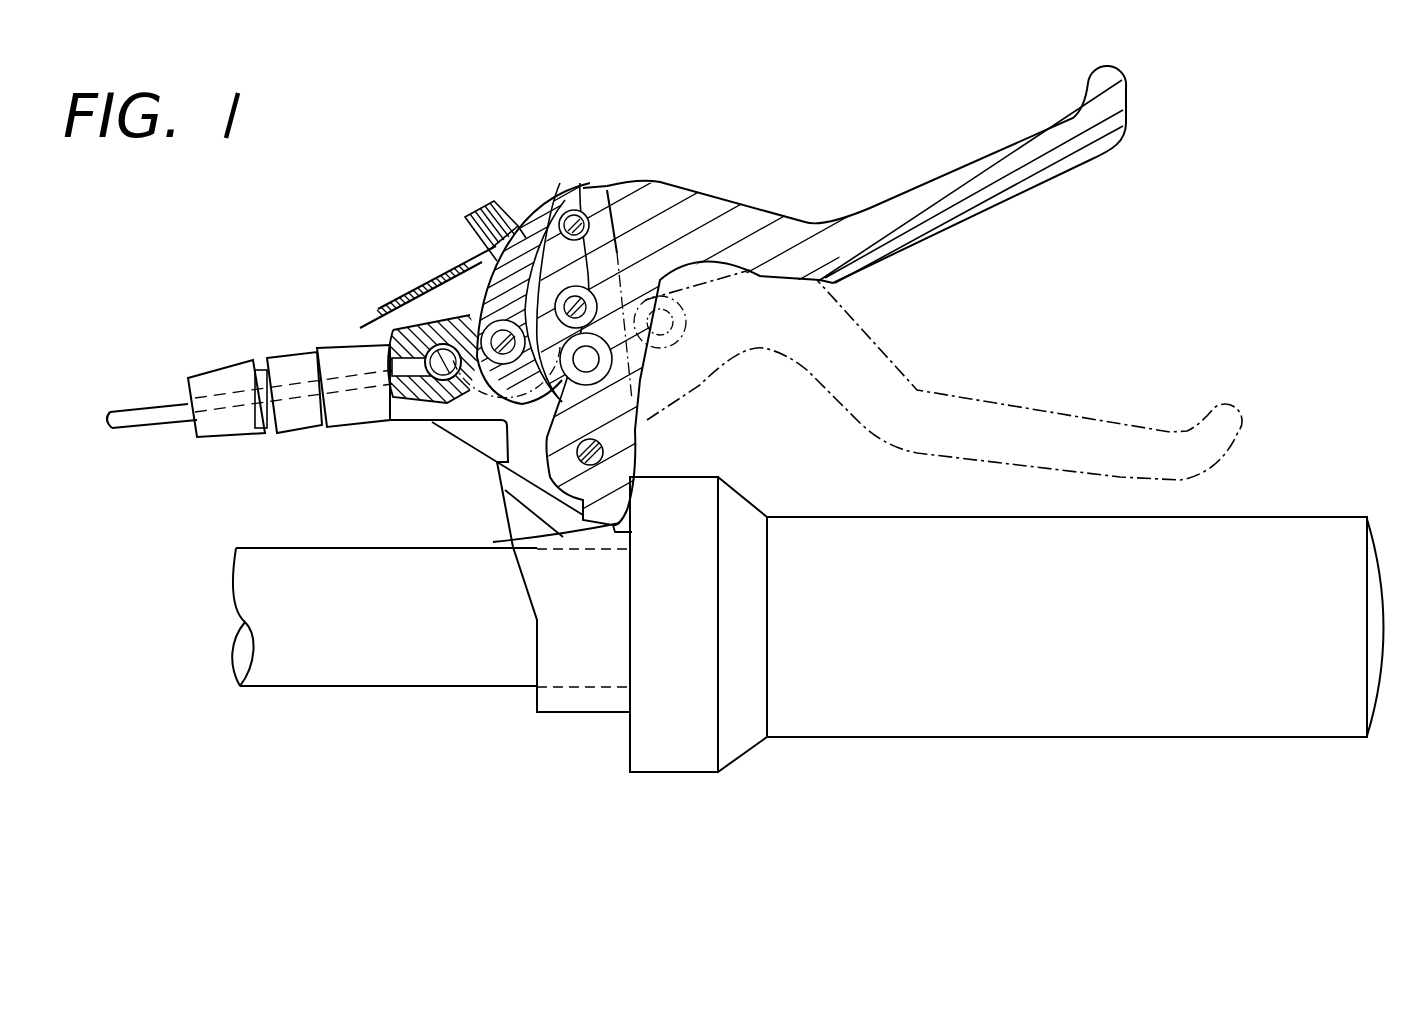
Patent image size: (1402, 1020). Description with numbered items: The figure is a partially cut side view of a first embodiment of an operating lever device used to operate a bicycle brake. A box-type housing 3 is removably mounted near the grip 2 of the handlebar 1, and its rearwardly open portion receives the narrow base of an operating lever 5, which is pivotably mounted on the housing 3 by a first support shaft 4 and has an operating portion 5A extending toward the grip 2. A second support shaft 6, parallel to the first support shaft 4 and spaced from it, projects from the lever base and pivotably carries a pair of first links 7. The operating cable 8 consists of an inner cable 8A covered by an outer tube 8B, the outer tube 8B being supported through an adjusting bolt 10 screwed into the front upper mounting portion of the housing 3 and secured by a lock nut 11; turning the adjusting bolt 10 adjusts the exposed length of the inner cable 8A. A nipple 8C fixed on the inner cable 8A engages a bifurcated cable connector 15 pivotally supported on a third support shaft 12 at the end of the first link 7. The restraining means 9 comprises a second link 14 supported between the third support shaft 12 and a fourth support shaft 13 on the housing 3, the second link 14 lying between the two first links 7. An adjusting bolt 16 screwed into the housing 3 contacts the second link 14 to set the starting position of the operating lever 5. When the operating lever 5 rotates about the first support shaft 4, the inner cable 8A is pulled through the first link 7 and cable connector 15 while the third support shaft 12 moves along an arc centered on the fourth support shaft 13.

The handlebar 1 is at (287, 688).
The grip 2 is at (959, 742).
The housing 3 is at (442, 428).
The first support shaft 4 is at (604, 450).
The operating lever 5 is at (778, 218).
The operating portion 5A is at (933, 187).
The second support shaft 6 is at (597, 281).
The first link 7 is at (570, 288).
The operating cable 8 is at (168, 385).
The inner cable 8A is at (375, 345).
The outer tube 8B is at (150, 424).
The nipple 8C is at (425, 328).
The restraining means 9 is at (474, 290).
The adjusting bolt 10 is at (222, 438).
The lock nut 11 is at (303, 432).
The third support shaft 12 is at (490, 372).
The fourth support shaft 13 is at (579, 212).
The second link 14 is at (532, 217).
The cable connector 15 is at (410, 410).
The adjusting bolt 16 is at (475, 208).